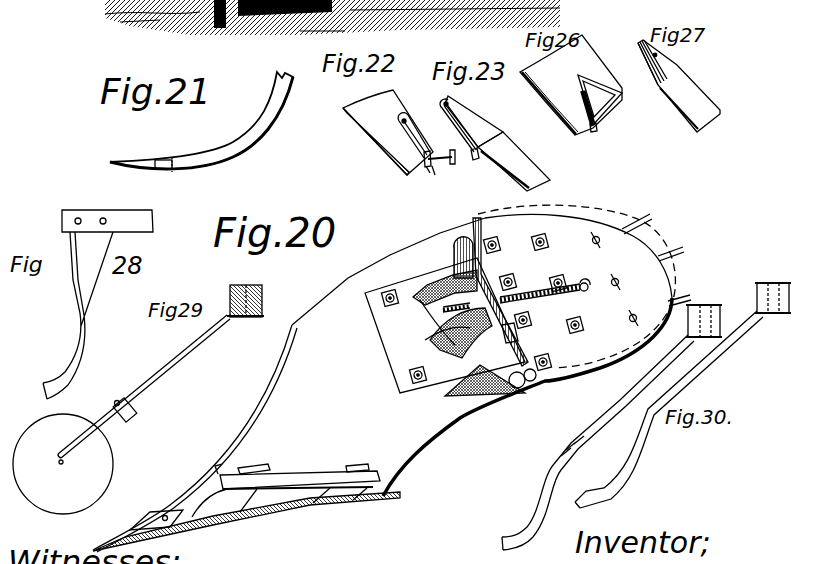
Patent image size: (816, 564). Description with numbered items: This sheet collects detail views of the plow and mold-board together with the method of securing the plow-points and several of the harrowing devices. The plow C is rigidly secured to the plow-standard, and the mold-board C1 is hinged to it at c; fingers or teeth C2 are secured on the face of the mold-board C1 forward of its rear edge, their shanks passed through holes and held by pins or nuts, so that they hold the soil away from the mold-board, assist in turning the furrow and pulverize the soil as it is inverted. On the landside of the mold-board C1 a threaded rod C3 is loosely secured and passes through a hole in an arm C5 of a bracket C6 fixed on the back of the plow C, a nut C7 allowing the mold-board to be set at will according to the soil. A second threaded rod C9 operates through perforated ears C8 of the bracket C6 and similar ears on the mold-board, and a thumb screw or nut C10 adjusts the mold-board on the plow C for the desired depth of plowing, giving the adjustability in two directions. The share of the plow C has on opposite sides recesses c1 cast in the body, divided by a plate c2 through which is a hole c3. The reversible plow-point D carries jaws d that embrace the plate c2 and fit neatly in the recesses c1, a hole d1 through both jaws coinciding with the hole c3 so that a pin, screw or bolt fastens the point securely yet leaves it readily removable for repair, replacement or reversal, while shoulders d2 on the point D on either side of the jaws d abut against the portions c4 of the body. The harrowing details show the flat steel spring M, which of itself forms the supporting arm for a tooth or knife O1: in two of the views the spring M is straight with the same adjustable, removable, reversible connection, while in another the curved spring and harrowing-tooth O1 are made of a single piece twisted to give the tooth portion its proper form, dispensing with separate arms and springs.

In FIG. 20, the plow C is at (382, 385).
In FIG. 20, the mold-board C1 is at (576, 286).
In FIG. 20, the rearwardly-inclined fingers or teeth C2 is at (661, 251).
In FIG. 20, the threaded rod C3 is at (482, 308).
In FIG. 20, the arm C5 is at (452, 314).
In FIG. 20, the bracket C6 is at (445, 325).
In FIG. 20, the nut C7 is at (458, 283).
In FIG. 20, the perforated ears C8 is at (512, 388).
In FIG. 20, the threaded rod C9 is at (516, 292).
In FIG. 20, the thumb screw or nut C10 is at (531, 382).
In FIG. 20, the hinge c is at (495, 304).
In FIG. 22, the recesses c1 is at (445, 155).
In FIG. 23, the recesses c1 is at (470, 162).
In FIG. 26, the recesses c1 is at (606, 104).
In FIG. 21, the plate c2 is at (165, 168).
In FIG. 22, the plate c2 is at (434, 170).
In FIG. 22, the hole c3 is at (407, 116).
In FIG. 26, the hole c3 is at (590, 87).
In FIG. 22, the portions of the body c4 is at (426, 167).
In FIG. 26, the portions of the body c4 is at (593, 131).
In FIG. 23, the jaws d is at (474, 121).
In FIG. 23, the hole d1 is at (450, 102).
In FIG. 23, the shoulders d2 is at (514, 155).
In FIG. 27, the shoulders d2 is at (679, 86).
In FIG. 23, the reversible plow-point D is at (497, 143).
In FIG. 27, the reversible plow-point D is at (679, 86).
In FIG. 28, the flat steel spring M is at (107, 236).
In FIG. 29, the flat steel spring M is at (161, 371).
In FIG. 30, the flat steel spring M is at (646, 416).
In FIG. 28, the teeth or knives O1 is at (78, 315).
In FIG. 29, the teeth or knives O1 is at (63, 464).